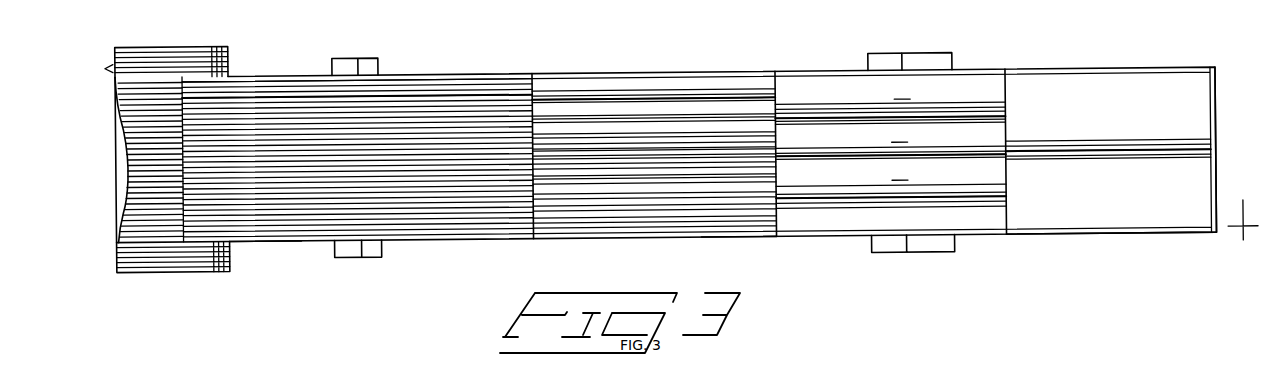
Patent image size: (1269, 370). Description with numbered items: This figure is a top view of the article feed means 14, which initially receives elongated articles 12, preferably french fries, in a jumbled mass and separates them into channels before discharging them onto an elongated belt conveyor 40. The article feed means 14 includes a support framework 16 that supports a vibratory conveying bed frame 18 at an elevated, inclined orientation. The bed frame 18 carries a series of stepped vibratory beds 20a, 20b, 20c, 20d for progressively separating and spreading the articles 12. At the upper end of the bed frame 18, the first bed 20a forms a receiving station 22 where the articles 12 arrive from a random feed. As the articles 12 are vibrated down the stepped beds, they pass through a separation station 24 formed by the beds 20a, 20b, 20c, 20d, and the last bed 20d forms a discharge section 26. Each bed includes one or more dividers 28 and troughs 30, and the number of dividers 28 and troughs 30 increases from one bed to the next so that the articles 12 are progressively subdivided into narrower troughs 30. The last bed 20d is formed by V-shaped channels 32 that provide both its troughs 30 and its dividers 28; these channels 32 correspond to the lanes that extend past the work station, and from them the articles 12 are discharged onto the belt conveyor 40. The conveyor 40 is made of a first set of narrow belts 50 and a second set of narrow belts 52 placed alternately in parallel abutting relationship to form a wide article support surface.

The elongated articles 12 is at (1242, 210).
The article feed means 14 is at (585, 76).
The support framework 16 is at (368, 72).
The vibratory conveying bed frame 18 is at (522, 79).
The stepped vibratory bed 20a is at (1085, 91).
The stepped vibratory bed 20b is at (830, 233).
The stepped vibratory bed 20c is at (636, 235).
The stepped vibratory bed 20d is at (444, 242).
The receiving station 22 is at (1134, 245).
The separation station 24 is at (734, 243).
The discharge section 26 is at (263, 244).
The dividers 28 is at (678, 122).
The troughs 30 is at (728, 107).
The channels 32 is at (282, 114).
The elongated belt conveyor 40 is at (178, 45).
The first set of narrow belts 50 is at (113, 51).
The second set of narrow belts 52 is at (113, 67).